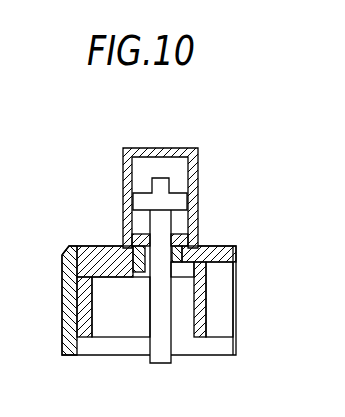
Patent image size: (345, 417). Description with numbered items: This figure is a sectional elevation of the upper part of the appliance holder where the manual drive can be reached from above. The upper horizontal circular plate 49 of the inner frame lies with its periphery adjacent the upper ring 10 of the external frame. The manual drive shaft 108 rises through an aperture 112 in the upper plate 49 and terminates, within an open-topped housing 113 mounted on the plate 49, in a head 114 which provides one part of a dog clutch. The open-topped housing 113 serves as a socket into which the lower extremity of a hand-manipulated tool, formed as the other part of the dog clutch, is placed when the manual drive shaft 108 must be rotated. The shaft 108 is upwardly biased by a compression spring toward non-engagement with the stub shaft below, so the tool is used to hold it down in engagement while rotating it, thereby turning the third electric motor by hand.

The upper ring 10 is at (70, 241).
The upper horizontal circular plate 49 is at (236, 262).
The manual drive shaft 108 is at (164, 356).
The aperture 112 is at (210, 247).
The open-topped housing 113 is at (192, 198).
The head 114 is at (176, 200).